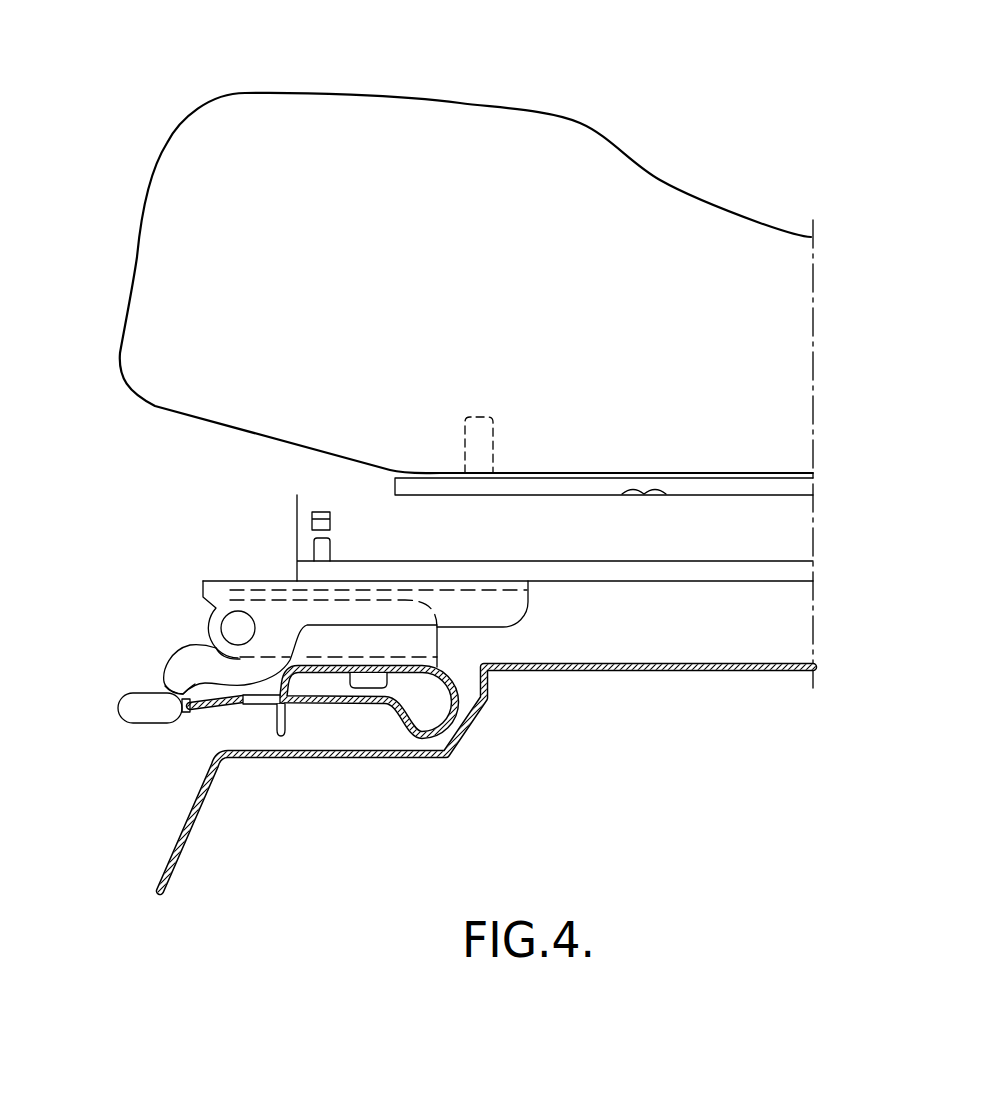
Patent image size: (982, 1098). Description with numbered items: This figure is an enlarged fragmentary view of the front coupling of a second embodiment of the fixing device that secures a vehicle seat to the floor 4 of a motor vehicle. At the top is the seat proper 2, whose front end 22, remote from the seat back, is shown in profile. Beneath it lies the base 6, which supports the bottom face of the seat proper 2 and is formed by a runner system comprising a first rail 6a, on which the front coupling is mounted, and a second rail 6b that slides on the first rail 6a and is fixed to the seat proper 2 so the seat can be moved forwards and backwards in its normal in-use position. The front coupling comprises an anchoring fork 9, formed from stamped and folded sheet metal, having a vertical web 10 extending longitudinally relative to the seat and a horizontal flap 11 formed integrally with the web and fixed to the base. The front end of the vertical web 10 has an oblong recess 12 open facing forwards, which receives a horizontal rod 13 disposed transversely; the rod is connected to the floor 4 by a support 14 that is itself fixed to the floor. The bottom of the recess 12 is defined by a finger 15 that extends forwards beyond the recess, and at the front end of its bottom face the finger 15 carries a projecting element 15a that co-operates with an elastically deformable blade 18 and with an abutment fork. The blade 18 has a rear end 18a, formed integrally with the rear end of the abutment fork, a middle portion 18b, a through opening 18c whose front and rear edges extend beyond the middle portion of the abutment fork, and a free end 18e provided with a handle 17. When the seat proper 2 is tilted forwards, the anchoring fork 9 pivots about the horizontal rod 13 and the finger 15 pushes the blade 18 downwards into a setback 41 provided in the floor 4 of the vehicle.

The seat proper 2 is at (178, 103).
The front end 22 is at (151, 255).
The base 6 is at (535, 499).
The first rail 6a is at (770, 532).
The second rail 6b is at (797, 485).
The horizontal flap 11 is at (267, 581).
The vertical web 10 is at (207, 600).
The oblong recess 12 is at (310, 591).
The horizontal rod 13 is at (237, 627).
The support 14 is at (437, 642).
The anchoring fork 9 is at (531, 618).
The finger 15 is at (242, 662).
The projecting element 15a is at (170, 665).
The handle 17 is at (130, 707).
The elastically deformable blade 18 is at (292, 754).
The rear end 18a is at (413, 737).
The middle portion 18b is at (308, 705).
The through opening 18c is at (258, 699).
The free end 18e is at (193, 716).
The setback 41 is at (350, 737).
The floor 4 is at (650, 670).